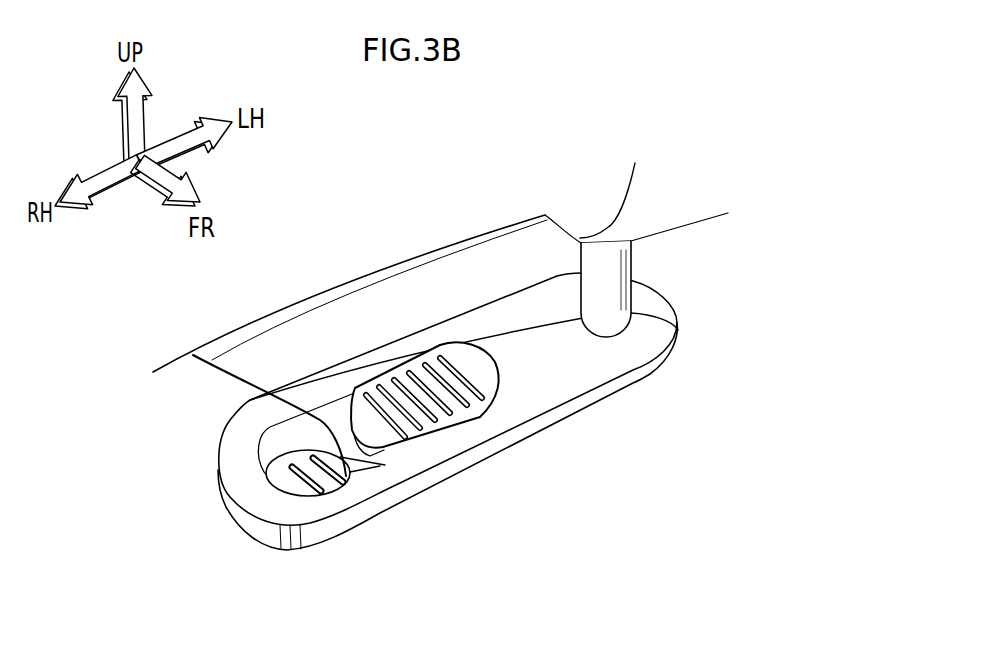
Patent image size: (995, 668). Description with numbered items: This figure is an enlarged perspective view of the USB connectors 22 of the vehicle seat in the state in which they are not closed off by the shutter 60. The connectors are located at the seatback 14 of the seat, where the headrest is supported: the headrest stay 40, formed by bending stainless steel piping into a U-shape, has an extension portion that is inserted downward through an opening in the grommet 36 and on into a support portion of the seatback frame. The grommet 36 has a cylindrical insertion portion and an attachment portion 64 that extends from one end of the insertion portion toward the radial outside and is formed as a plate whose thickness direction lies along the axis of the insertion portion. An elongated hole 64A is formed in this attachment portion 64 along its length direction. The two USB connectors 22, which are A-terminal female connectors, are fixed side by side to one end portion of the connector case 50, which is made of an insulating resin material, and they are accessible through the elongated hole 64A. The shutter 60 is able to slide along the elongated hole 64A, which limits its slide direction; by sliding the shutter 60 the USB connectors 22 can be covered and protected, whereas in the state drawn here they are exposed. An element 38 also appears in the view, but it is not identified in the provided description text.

The seatback 14 is at (460, 243).
The USB connectors 22 is at (193, 355).
The grommet 36 is at (686, 333).
The seat leg 38 is at (730, 225).
The headrest stay 40 is at (631, 267).
The connector case 50 is at (262, 442).
The shutter 60 is at (387, 447).
The attachment portion 64 is at (640, 378).
The elongated hole 64A is at (338, 395).